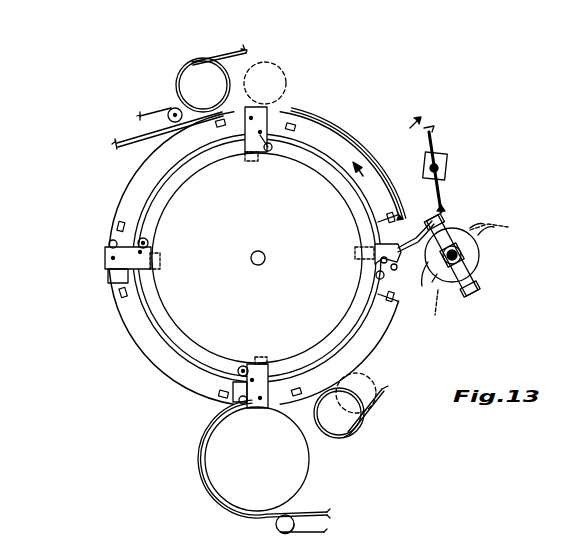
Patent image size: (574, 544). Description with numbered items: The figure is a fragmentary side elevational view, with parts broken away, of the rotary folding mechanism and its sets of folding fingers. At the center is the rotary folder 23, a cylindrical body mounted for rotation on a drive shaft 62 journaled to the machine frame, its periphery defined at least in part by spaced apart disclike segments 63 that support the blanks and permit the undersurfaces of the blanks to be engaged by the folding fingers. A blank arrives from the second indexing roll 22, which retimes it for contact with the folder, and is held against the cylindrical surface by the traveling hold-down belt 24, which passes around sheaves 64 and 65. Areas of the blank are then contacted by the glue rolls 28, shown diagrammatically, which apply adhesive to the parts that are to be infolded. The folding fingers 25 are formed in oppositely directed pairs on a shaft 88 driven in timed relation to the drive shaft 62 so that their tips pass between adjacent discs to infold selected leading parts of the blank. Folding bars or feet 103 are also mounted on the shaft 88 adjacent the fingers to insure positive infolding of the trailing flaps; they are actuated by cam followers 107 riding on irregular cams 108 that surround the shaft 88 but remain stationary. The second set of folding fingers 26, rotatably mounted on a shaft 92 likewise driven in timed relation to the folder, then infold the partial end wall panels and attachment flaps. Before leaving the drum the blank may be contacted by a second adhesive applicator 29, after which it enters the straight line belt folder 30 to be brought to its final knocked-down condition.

The second indexing roll 22 is at (310, 466).
The rotary folder 23 is at (72, 265).
The traveling belt 24 is at (392, 406).
The folding fingers 25 is at (479, 276).
The folding fingers 26 is at (454, 183).
The glue rolls 28 is at (372, 380).
The second adhesive applicator 29 is at (286, 80).
The straight line belt folder 30 is at (117, 153).
The drive shaft 62 is at (265, 258).
The disclike segments 63 is at (126, 345).
The sheave 64 is at (350, 427).
The sheave 65 is at (196, 73).
The shaft 88 is at (463, 255).
The shaft 92 is at (448, 165).
The folding bars or feet 103 is at (492, 280).
The cam followers 107 is at (476, 300).
The irregular cams 108 is at (434, 298).